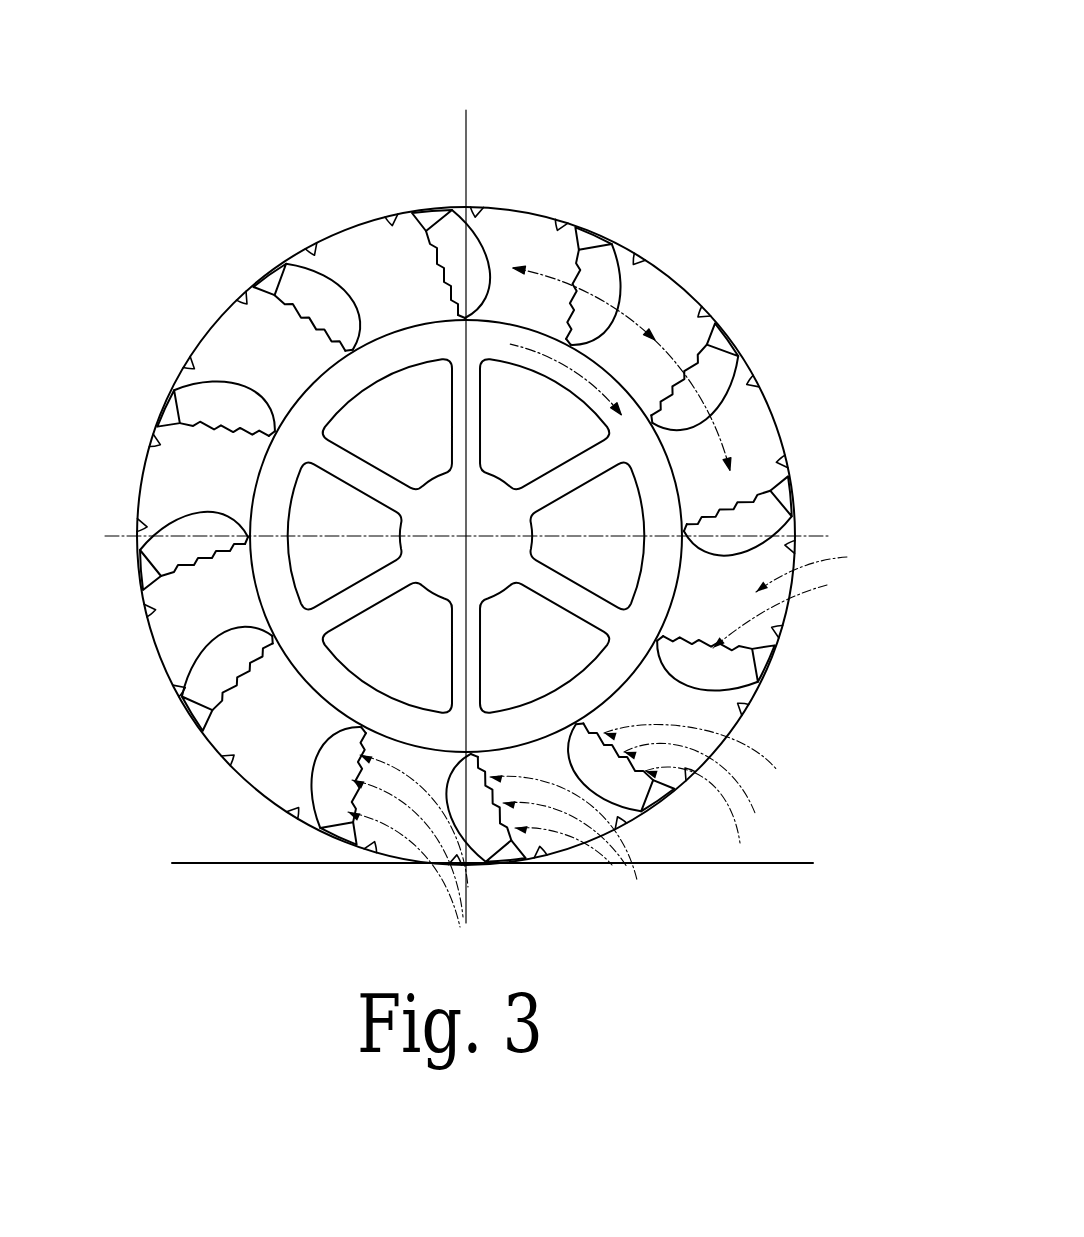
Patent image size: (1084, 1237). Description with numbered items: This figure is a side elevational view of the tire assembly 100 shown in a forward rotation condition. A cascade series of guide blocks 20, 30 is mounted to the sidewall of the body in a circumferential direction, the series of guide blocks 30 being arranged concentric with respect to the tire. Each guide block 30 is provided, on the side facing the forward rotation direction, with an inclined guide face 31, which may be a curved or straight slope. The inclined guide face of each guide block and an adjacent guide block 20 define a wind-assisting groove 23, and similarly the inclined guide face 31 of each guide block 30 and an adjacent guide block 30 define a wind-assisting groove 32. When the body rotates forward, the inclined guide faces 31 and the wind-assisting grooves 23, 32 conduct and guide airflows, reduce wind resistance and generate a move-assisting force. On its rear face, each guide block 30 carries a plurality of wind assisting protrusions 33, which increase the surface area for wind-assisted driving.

The wheel assembly 100 is at (796, 141).
The guide block 20 is at (653, 265).
The wind-assisting groove 23 is at (673, 342).
The guide block 30 is at (523, 493).
The inclined guide face 31 is at (724, 402).
The wind-assisting groove 32 is at (706, 335).
The wind assisting protrusion 33 is at (720, 333).